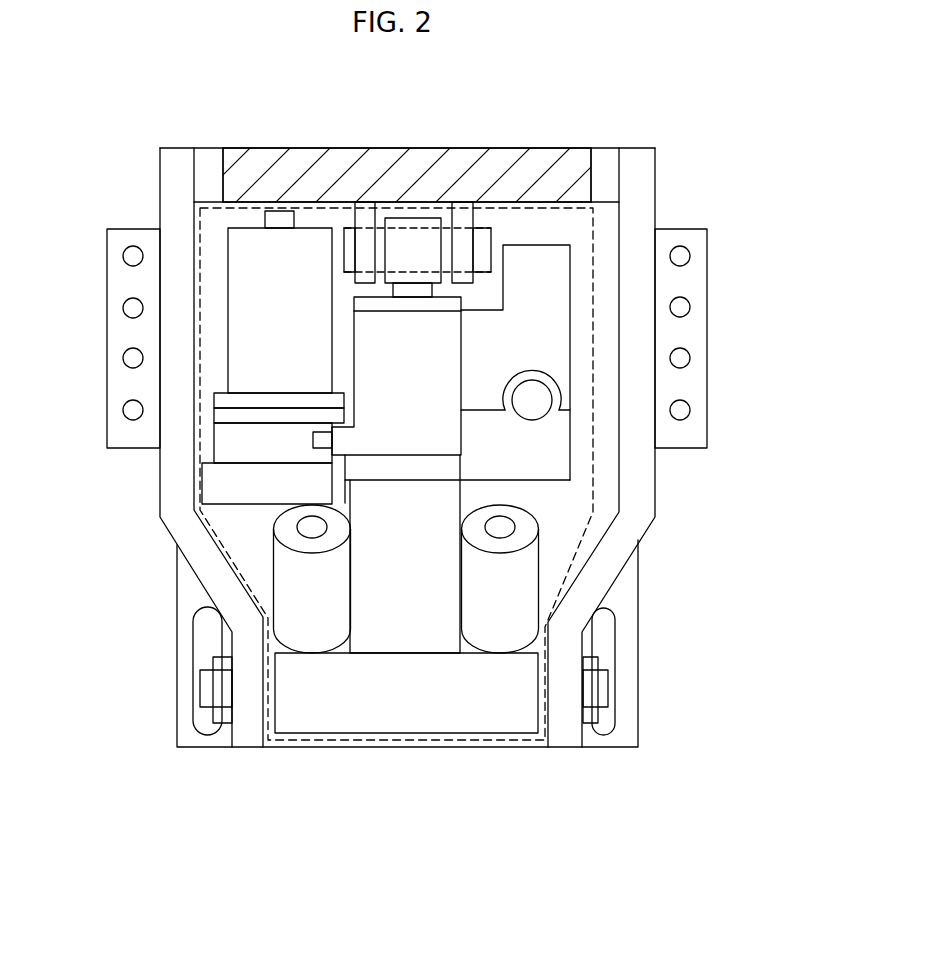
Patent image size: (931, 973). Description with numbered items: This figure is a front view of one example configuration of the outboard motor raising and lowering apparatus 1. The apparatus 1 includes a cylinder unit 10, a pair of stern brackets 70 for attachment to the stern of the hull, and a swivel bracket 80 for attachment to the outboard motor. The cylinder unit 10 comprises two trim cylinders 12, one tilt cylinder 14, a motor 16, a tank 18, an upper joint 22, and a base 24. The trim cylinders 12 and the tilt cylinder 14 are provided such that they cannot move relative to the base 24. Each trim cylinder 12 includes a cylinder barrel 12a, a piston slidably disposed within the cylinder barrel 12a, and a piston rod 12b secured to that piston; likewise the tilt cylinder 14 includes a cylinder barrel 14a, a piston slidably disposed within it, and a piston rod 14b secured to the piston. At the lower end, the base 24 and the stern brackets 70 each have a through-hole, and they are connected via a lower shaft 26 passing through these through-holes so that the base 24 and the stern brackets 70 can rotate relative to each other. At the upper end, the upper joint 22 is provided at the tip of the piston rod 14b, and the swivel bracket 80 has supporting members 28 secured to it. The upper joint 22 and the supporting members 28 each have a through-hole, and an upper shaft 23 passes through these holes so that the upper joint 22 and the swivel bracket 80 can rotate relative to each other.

The outboard motor raising and lowering apparatus 1 is at (108, 100).
The cylinder unit 10 is at (319, 742).
The trim cylinder 12 is at (90, 530).
The cylinder barrel 12a is at (293, 588).
The piston rod 12b is at (312, 523).
The tilt cylinder 14 is at (781, 322).
The cylinder barrel 14a is at (435, 380).
The piston rod 14b is at (423, 292).
The motor 16 is at (245, 279).
The tank 18 is at (557, 277).
The upper joint 22 is at (417, 218).
The upper shaft 23 is at (483, 218).
The base 24 is at (467, 713).
The lower shaft 26 is at (605, 685).
The supporting member 28 is at (360, 208).
The stern bracket 70 is at (175, 173).
The swivel bracket 80 is at (547, 160).